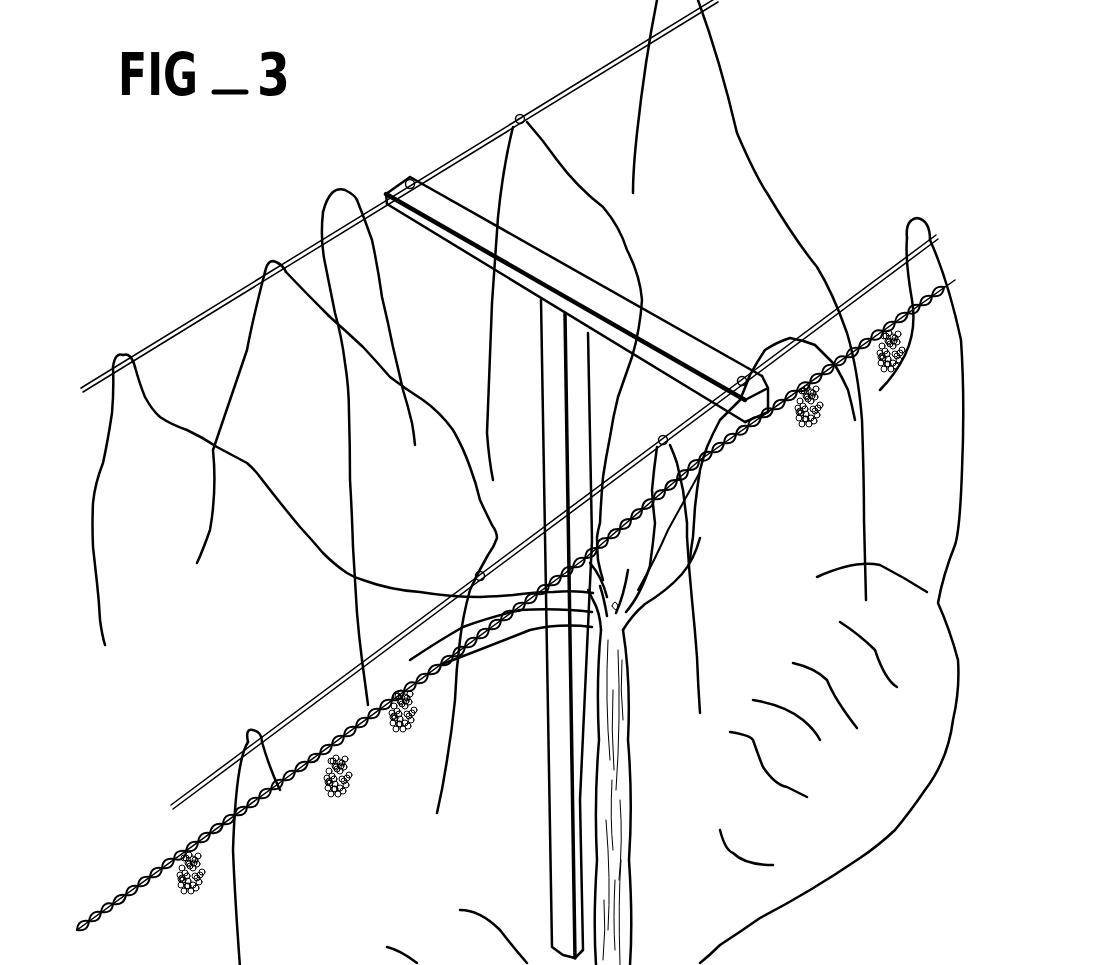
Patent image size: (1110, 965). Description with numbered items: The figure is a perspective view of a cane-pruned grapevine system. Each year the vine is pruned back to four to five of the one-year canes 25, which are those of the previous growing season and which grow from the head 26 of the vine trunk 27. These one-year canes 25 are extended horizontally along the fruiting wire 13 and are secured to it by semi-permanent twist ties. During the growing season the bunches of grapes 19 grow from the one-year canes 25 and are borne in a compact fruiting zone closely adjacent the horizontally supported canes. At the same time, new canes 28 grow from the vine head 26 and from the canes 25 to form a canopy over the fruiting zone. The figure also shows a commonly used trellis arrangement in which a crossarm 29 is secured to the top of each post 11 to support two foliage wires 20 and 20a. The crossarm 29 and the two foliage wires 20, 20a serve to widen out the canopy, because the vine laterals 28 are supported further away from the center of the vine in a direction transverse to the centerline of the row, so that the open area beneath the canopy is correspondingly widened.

The post 11 is at (560, 736).
The fruiting wire 13 is at (583, 557).
The bunches of grapes 19 is at (893, 372).
The foliage wire 20 is at (613, 62).
The foliage wire 20a is at (868, 282).
The one-year canes 25 is at (727, 457).
The head 26 is at (632, 636).
The vine trunk 27 is at (623, 814).
The new canes 28 is at (624, 234).
The crossarm 29 is at (677, 337).